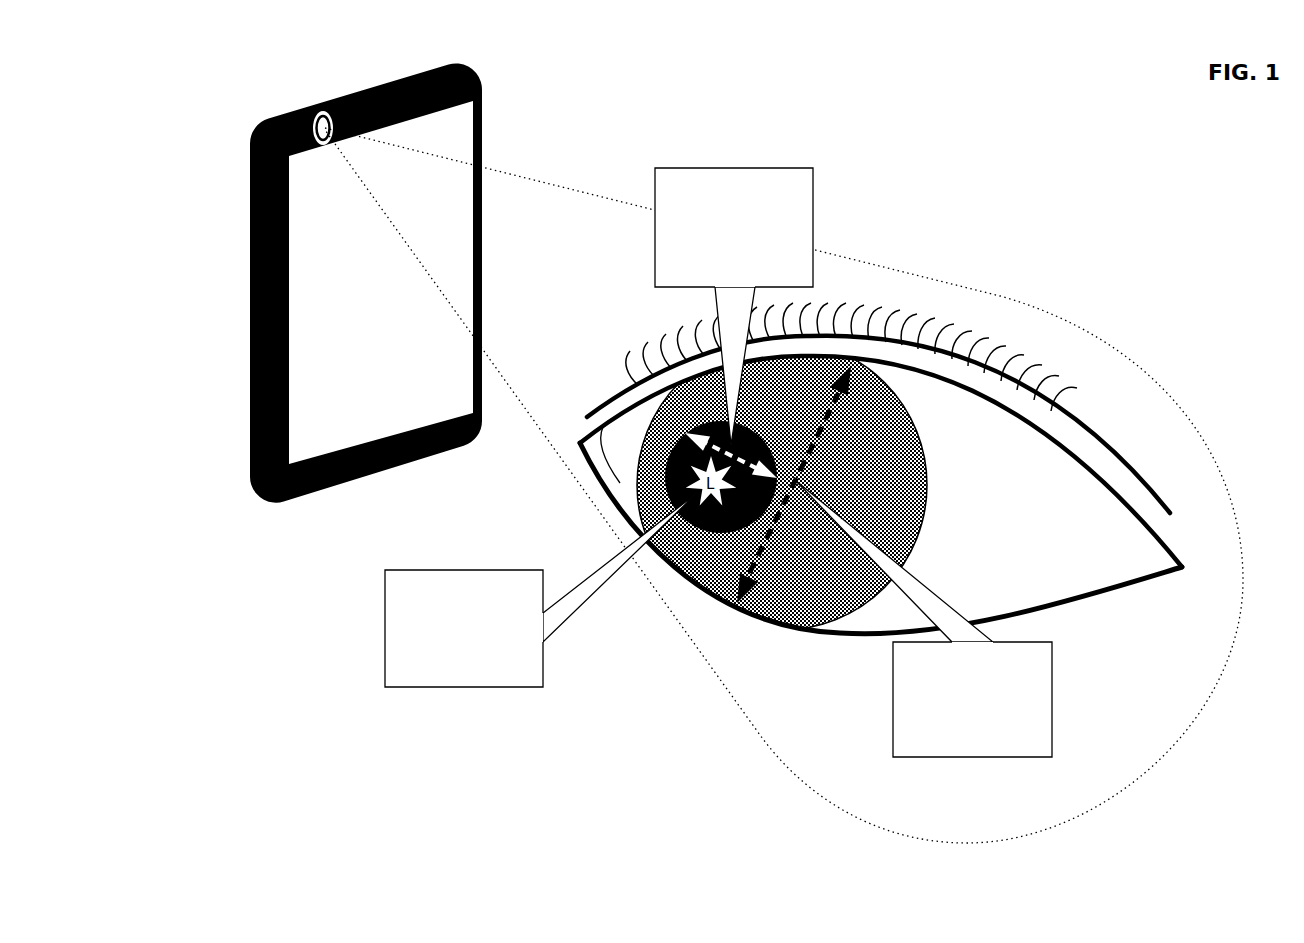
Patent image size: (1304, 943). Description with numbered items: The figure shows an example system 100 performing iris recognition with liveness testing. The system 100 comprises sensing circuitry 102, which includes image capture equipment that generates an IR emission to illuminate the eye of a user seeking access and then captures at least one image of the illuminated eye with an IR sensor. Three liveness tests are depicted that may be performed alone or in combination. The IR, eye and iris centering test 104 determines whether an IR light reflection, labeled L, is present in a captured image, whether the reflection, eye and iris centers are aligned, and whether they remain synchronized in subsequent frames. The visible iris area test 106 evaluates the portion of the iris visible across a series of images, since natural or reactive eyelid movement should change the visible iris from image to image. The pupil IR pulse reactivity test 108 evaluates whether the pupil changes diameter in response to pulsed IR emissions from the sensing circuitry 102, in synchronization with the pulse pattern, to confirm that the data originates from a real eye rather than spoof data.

The system 100 is at (532, 93).
The sensing circuitry 102 is at (335, 133).
The IR, eye and iris centering test 104 is at (450, 660).
The visible iris area test 106 is at (958, 730).
The pupil IR pulse reactivity test 108 is at (720, 260).